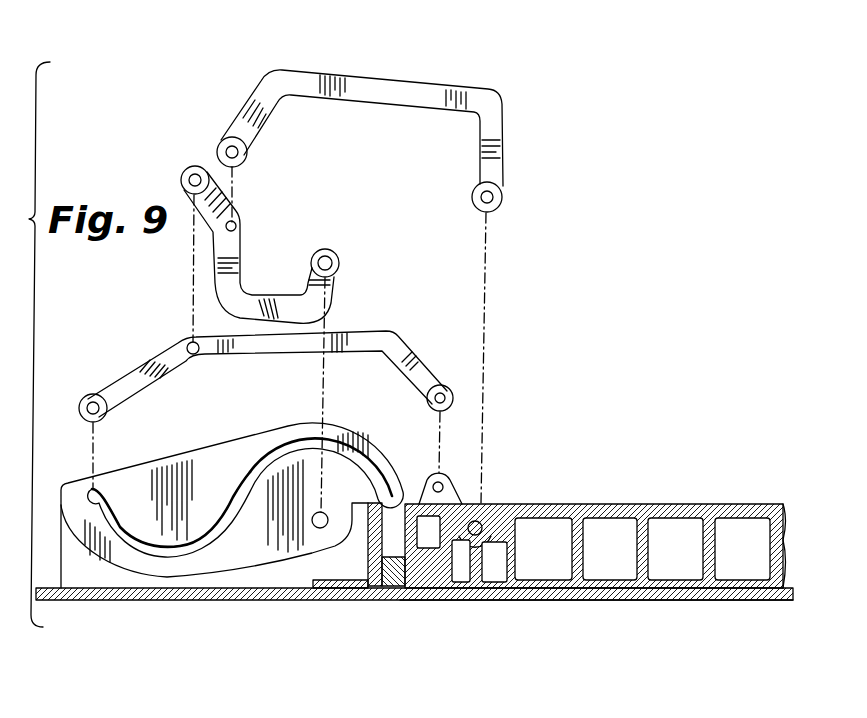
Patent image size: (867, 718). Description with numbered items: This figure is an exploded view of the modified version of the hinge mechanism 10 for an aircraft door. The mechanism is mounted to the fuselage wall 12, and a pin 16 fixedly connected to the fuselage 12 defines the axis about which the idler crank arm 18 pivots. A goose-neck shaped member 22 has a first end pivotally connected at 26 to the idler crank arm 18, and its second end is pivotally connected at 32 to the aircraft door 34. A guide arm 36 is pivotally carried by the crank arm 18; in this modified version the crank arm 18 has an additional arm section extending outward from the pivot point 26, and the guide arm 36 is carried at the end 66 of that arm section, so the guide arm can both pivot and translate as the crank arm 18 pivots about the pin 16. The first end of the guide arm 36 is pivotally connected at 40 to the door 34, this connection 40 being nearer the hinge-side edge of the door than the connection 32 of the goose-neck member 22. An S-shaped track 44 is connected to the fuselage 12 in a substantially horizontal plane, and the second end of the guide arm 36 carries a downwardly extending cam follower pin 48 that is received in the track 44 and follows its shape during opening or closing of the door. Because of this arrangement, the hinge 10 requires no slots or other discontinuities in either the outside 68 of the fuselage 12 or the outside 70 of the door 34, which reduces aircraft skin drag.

The hinge mechanism 10 is at (190, 118).
The fuselage wall 12 is at (133, 598).
The pin 16 is at (332, 258).
The idler crank arm 18 is at (260, 290).
The goose-neck shaped member 22 is at (388, 82).
The pivotal connection 26 is at (231, 137).
The pivotal connection 32 is at (500, 197).
The aircraft door 34 is at (633, 504).
The guide arm 36 is at (373, 332).
The pivotal connection 40 is at (453, 397).
The S-shaped track 44 is at (237, 500).
The cam follower pin 48 is at (96, 400).
The end of arm section 66 is at (190, 177).
The outside of fuselage 68 is at (330, 600).
The outside of door 70 is at (615, 602).